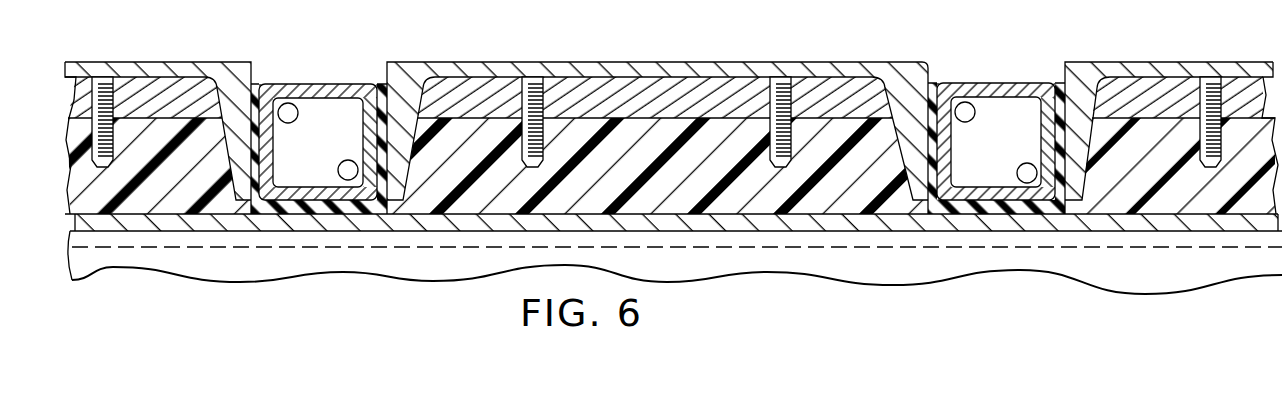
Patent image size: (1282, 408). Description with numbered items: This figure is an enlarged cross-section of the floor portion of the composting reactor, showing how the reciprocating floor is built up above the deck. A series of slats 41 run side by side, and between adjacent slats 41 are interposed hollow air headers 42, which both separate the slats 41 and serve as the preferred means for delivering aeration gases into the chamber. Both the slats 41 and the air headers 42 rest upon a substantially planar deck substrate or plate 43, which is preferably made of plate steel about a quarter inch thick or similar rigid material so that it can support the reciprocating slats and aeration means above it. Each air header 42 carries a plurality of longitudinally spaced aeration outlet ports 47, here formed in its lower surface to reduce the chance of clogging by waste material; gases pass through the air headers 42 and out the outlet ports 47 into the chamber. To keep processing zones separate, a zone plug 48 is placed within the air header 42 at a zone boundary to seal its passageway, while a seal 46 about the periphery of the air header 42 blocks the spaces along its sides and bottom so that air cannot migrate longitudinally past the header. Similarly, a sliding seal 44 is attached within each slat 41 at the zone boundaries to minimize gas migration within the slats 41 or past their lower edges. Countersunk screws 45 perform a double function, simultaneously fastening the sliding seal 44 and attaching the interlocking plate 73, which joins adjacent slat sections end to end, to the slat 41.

The slat 41 is at (657, 117).
The air header 42 is at (990, 83).
The deck substrate or plate 43 is at (232, 223).
The sliding seal 44 is at (672, 128).
The countersunk screw 45 is at (537, 68).
The seal 46 is at (383, 214).
The aeration outlet port 47 is at (997, 207).
The zone plug 48 is at (318, 103).
The interlocking plate 73 is at (597, 82).